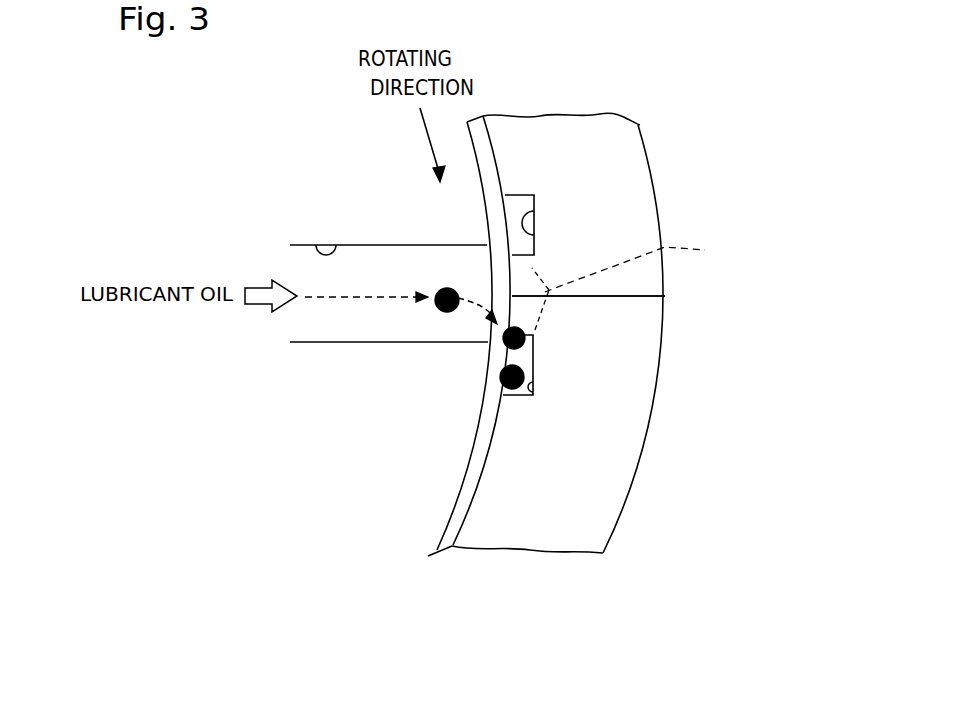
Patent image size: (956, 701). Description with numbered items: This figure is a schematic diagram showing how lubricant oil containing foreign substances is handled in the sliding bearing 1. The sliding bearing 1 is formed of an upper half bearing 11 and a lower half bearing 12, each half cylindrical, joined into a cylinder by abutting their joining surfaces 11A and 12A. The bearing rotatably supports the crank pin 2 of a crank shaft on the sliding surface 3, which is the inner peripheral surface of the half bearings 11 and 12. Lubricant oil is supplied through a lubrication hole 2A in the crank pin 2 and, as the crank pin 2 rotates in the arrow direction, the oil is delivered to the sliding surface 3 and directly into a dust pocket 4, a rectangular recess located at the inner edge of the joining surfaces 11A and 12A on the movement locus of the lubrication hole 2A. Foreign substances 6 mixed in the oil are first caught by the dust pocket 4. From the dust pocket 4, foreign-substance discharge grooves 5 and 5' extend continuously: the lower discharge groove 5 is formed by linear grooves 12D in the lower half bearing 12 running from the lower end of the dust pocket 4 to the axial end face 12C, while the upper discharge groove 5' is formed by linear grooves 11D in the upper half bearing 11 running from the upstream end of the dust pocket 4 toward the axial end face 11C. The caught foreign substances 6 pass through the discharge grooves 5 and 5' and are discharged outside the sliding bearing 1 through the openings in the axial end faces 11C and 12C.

The sliding bearing 1 is at (655, 135).
The crank pin 2 is at (425, 508).
The lubrication hole 2A is at (320, 245).
The sliding surface 3 is at (475, 483).
The dust pocket 4 is at (637, 264).
The foreign-substance discharge groove 5 is at (518, 414).
The foreign-substance discharge groove 5' is at (533, 200).
The foreign substances 6 is at (445, 310).
The upper half bearing 11 is at (618, 193).
The joining surface 11A is at (638, 296).
The axial end face 11C is at (636, 232).
The linear groove 11D is at (538, 235).
The lower half bearing 12 is at (600, 478).
The joining surface 12A is at (604, 298).
The axial end face 12C is at (570, 507).
The linear groove 12D is at (538, 388).